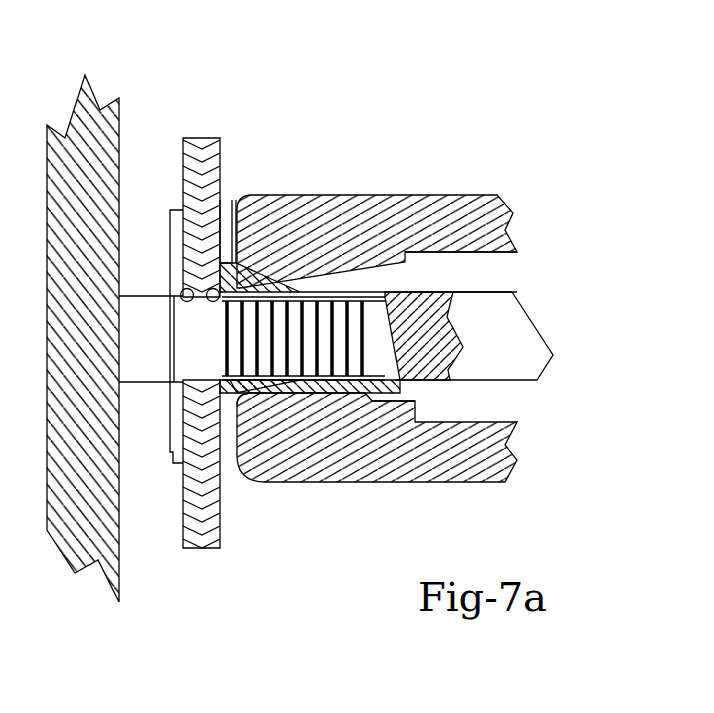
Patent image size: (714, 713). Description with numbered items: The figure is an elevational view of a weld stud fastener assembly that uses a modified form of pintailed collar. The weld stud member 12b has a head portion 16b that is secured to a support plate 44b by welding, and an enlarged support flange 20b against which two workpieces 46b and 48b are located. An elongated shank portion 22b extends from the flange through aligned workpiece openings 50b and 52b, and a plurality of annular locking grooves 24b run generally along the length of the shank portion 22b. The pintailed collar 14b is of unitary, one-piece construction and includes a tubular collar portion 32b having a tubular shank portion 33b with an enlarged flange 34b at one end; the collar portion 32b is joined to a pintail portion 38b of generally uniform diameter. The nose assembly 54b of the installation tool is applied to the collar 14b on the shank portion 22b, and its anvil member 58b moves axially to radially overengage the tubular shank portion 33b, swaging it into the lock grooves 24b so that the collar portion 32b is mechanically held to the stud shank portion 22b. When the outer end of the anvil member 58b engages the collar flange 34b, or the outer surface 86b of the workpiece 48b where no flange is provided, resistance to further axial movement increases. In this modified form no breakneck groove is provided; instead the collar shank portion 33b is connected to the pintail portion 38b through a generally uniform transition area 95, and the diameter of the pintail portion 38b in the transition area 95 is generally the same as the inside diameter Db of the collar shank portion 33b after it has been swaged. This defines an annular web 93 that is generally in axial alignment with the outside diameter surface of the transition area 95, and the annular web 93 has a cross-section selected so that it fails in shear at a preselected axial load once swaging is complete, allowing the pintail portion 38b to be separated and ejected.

The support plate 44b is at (93, 155).
The workpiece 46b is at (184, 136).
The workpiece 48b is at (199, 137).
The outer surface of workpiece 86b is at (232, 203).
The workpiece opening 50b is at (247, 290).
The workpiece opening 52b is at (287, 290).
The annular locking grooves 24b is at (403, 290).
The anvil member 58b is at (445, 193).
The nose assembly 54b is at (564, 145).
The annular web 93 is at (437, 178).
The transition area 95 is at (405, 292).
The pintail portion 38b is at (500, 312).
The weld stud member 12b is at (148, 295).
The head portion 16b is at (150, 363).
The enlarged support flange 20b is at (175, 462).
The enlarged flange 34b is at (227, 408).
The elongated shank portion 22b is at (247, 395).
The tubular shank portion 33b is at (322, 393).
The tubular collar portion 32b is at (480, 398).
The pintailed collar 14b is at (524, 384).
The inside diameter of collar shank portion Db is at (378, 297).